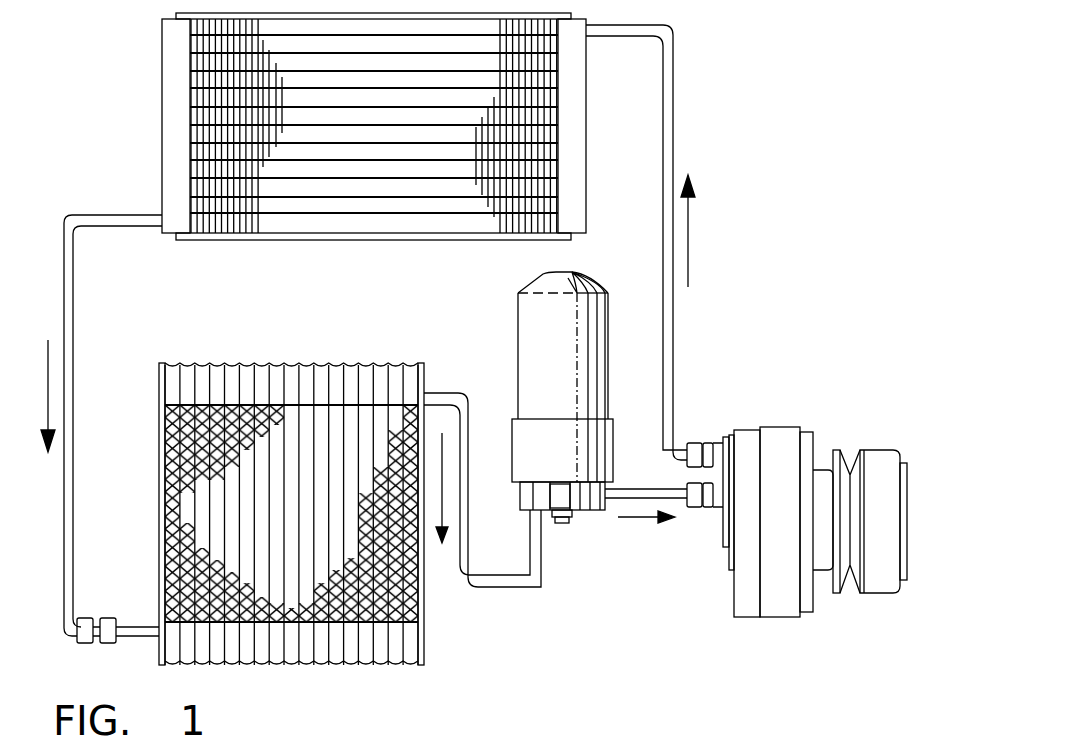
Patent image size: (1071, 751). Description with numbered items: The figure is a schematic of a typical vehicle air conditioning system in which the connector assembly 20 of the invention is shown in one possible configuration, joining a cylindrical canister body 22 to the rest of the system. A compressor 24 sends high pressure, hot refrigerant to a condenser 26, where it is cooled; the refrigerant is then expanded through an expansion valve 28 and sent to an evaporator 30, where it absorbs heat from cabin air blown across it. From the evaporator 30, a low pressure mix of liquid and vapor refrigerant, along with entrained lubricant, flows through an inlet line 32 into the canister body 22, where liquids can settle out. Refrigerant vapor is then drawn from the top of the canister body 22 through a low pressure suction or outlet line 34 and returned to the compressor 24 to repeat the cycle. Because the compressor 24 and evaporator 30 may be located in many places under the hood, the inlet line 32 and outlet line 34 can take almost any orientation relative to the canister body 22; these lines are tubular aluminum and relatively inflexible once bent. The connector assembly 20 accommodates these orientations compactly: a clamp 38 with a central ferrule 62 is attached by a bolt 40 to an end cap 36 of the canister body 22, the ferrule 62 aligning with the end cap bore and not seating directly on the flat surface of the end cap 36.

The connector assembly 20 is at (622, 314).
The cylindrical canister body 22 is at (523, 365).
The compressor 24 is at (790, 427).
The condenser 26 is at (335, 240).
The expansion valve 28 is at (97, 620).
The evaporator 30 is at (243, 367).
The inlet line 32 is at (540, 578).
The outlet line 34 is at (632, 496).
The end cap 36 is at (510, 447).
The clamp 38 is at (596, 531).
The bolt 40 is at (560, 525).
The central ferrule 62 is at (563, 497).